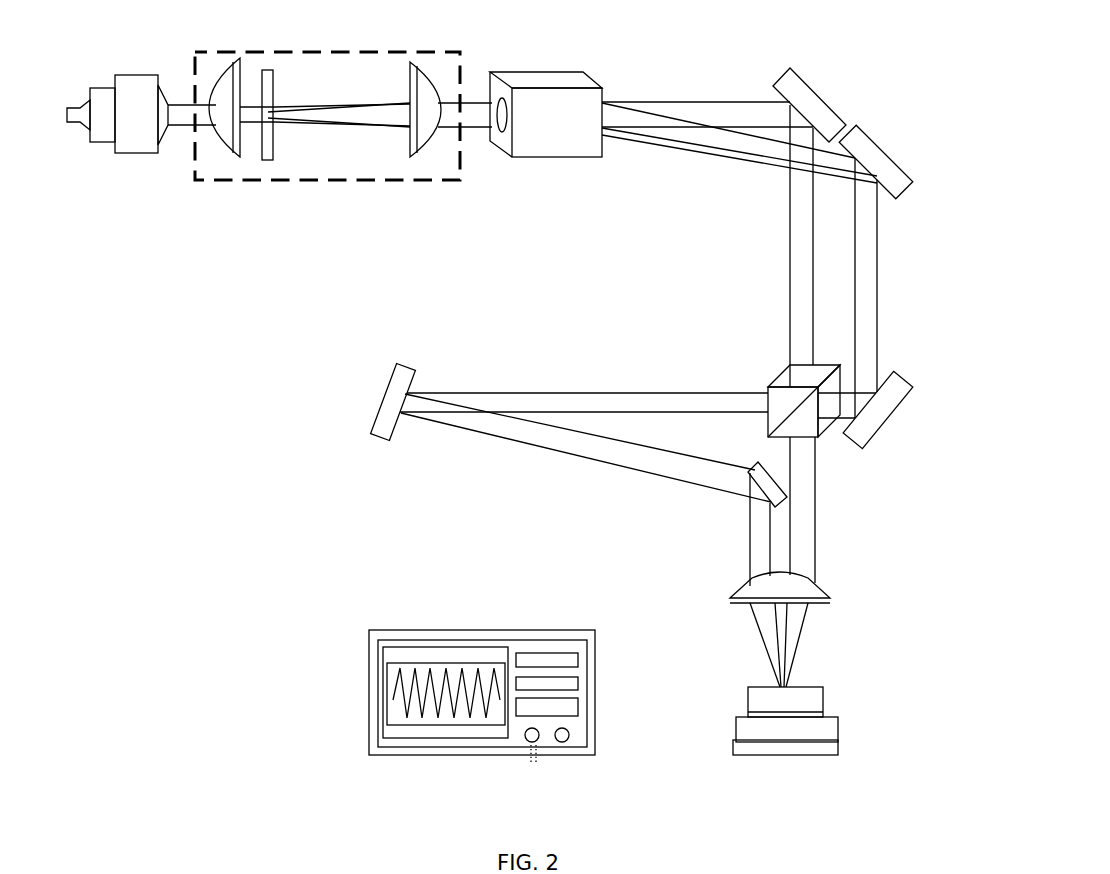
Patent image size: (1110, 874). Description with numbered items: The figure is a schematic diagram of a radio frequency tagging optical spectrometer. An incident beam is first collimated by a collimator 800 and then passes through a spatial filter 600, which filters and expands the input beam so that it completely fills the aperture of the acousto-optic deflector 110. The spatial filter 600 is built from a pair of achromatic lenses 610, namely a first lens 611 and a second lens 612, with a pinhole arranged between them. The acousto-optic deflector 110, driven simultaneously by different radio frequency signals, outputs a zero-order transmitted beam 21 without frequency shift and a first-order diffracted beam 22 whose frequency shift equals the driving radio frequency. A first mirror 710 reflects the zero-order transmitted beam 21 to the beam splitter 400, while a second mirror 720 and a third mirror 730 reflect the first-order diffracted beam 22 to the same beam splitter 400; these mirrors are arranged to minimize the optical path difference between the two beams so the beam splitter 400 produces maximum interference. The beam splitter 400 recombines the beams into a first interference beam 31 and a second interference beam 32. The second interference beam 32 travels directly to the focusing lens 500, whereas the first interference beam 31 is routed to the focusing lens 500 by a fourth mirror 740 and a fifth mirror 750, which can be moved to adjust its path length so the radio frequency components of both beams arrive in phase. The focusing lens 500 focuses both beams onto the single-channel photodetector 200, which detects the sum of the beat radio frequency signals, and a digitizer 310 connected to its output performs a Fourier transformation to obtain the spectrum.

The collimator 800 is at (136, 86).
The spatial filter 600 is at (327, 123).
The pair of achromatic lenses 610 is at (325, 151).
The first lens 611 is at (226, 151).
The second lens 612 is at (417, 153).
The acousto-optic deflector 110 is at (548, 88).
The zero-order transmitted beam 21 is at (677, 107).
The first-order diffracted beam 22 is at (758, 168).
The first interference beam 31 is at (566, 405).
The second interference beam 32 is at (800, 532).
The first mirror 710 is at (805, 90).
The second mirror 720 is at (880, 172).
The third mirror 730 is at (888, 413).
The fourth mirror 740 is at (388, 408).
The fifth mirror 750 is at (758, 468).
The beam splitter 400 is at (775, 386).
The focusing lens 500 is at (808, 598).
The single-channel photodetector 200 is at (810, 736).
The digitizer 310 is at (485, 635).